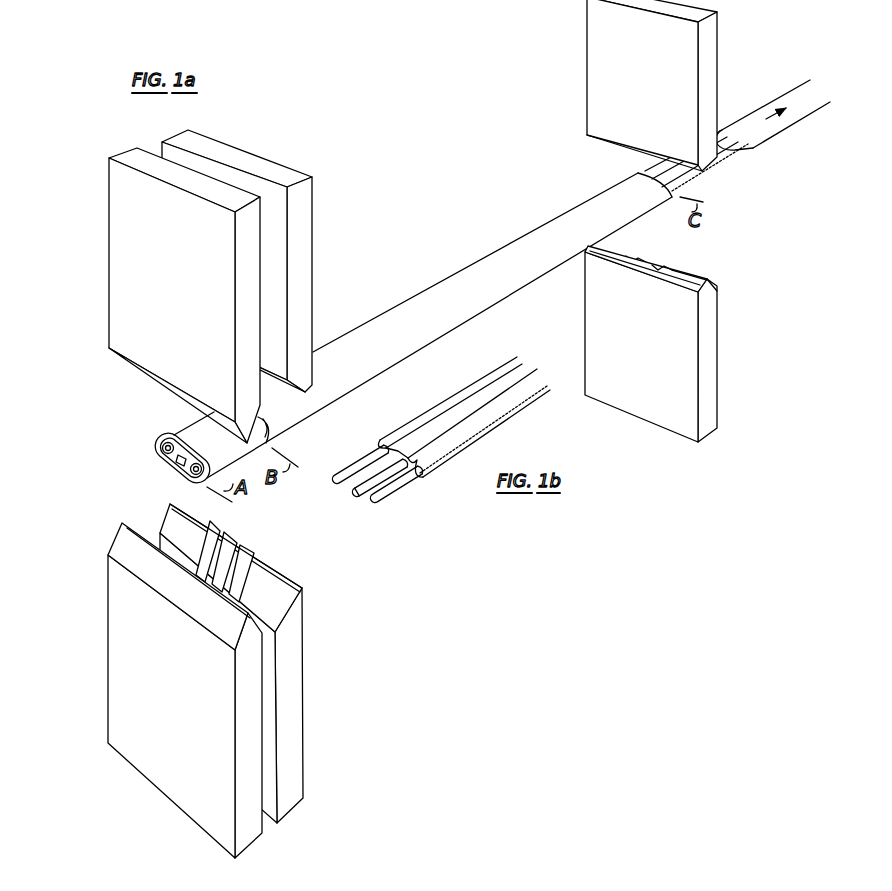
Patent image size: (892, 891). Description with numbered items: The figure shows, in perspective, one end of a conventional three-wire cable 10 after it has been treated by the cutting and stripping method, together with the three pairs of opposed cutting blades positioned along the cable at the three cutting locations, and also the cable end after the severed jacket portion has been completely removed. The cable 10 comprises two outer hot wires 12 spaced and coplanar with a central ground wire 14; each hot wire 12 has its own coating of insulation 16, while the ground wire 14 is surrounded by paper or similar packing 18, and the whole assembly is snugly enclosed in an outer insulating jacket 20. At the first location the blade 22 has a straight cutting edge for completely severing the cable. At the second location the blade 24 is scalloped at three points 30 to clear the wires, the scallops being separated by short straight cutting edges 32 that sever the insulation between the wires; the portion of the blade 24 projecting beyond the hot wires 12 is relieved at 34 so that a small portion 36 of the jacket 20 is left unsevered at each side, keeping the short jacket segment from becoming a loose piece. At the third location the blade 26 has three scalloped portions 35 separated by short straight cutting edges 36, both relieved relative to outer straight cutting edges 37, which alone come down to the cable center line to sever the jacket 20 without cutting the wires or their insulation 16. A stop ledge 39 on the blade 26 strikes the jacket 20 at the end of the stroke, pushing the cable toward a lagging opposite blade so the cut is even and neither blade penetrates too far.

In FIG. 1A, the three-wire cable 10 is at (478, 258).
In FIG. 1B, the outer hot wires 12 is at (363, 460).
In FIG. 1B, the central ground wire 14 is at (353, 497).
In FIG. 1A, the insulation 16 is at (658, 168).
In FIG. 1B, the insulation 16 is at (460, 392).
In FIG. 1A, the packing 18 is at (697, 178).
In FIG. 1B, the packing 18 is at (442, 420).
In FIG. 1A, the outer insulating jacket 20 is at (507, 296).
In FIG. 1A, the cutting blade 22 is at (104, 228).
In FIG. 1A, the cutting blade 24 is at (314, 220).
In FIG. 1A, the cutting blade 26 is at (585, 76).
In FIG. 1A, the scalloped points 30 is at (237, 541).
In FIG. 1A, the short straight cutting edges 32 is at (222, 530).
In FIG. 1A, the relieved portion 34 is at (285, 571).
In FIG. 1A, the relieved or scalloped portions 35 is at (655, 265).
In FIG. 1A, the short straight cutting edges 36 is at (274, 437).
In FIG. 1A, the outer straight cutting edges 37 is at (695, 273).
In FIG. 1A, the stop ledge 39 is at (717, 291).